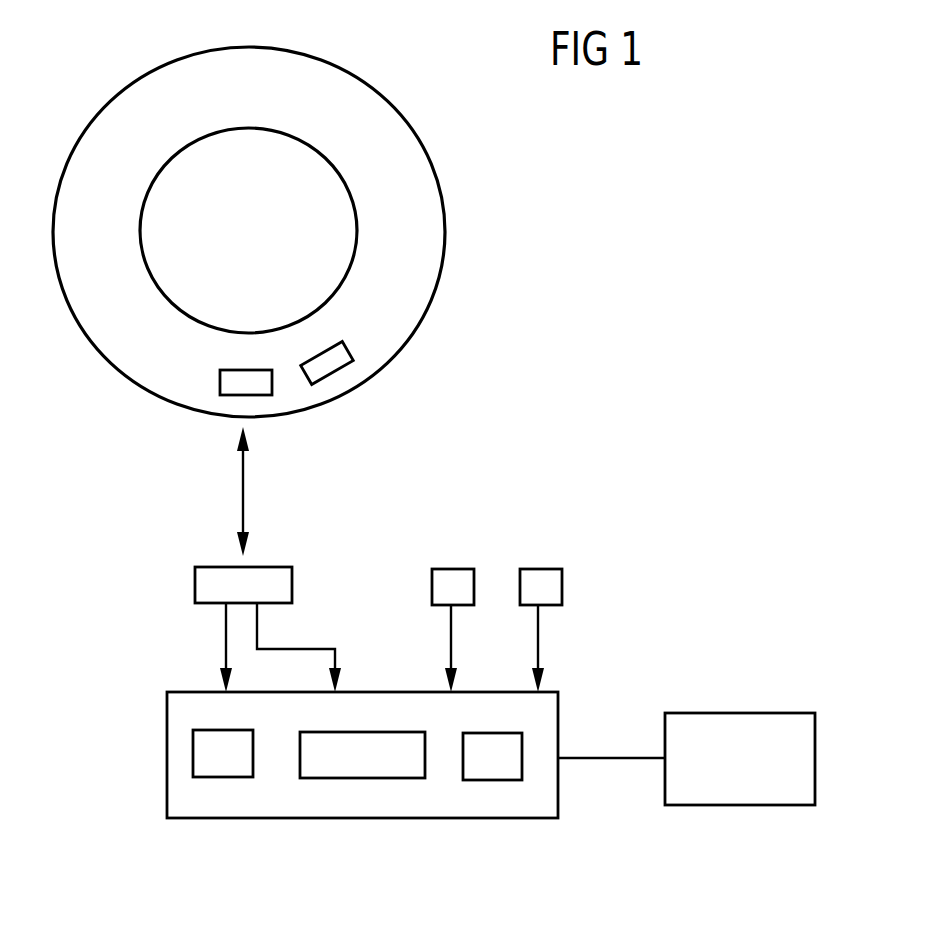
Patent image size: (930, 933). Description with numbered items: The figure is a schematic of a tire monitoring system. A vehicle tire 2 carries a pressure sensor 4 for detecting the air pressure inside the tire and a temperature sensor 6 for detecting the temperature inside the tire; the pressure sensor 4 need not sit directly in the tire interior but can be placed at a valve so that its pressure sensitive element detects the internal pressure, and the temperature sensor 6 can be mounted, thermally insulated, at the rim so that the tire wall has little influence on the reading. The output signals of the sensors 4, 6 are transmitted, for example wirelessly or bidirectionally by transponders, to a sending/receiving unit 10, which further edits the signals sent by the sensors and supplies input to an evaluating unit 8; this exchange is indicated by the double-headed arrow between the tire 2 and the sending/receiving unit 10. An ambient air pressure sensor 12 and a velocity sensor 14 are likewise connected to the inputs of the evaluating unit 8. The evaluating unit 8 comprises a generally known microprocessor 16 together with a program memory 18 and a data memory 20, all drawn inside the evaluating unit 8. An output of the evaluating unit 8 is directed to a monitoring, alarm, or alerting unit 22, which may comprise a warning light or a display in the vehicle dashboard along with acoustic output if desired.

The vehicle tire 2 is at (423, 233).
The pressure sensor 4 is at (220, 386).
The temperature sensor 6 is at (344, 350).
The evaluating unit 8 is at (318, 795).
The sending/receiving unit 10 is at (195, 577).
The ambient air pressure sensor 12 is at (452, 569).
The velocity sensor 14 is at (562, 585).
The microprocessor 16 is at (358, 778).
The program memory 18 is at (222, 777).
The data memory 20 is at (493, 780).
The monitoring, alarm, or alerting unit 22 is at (738, 805).